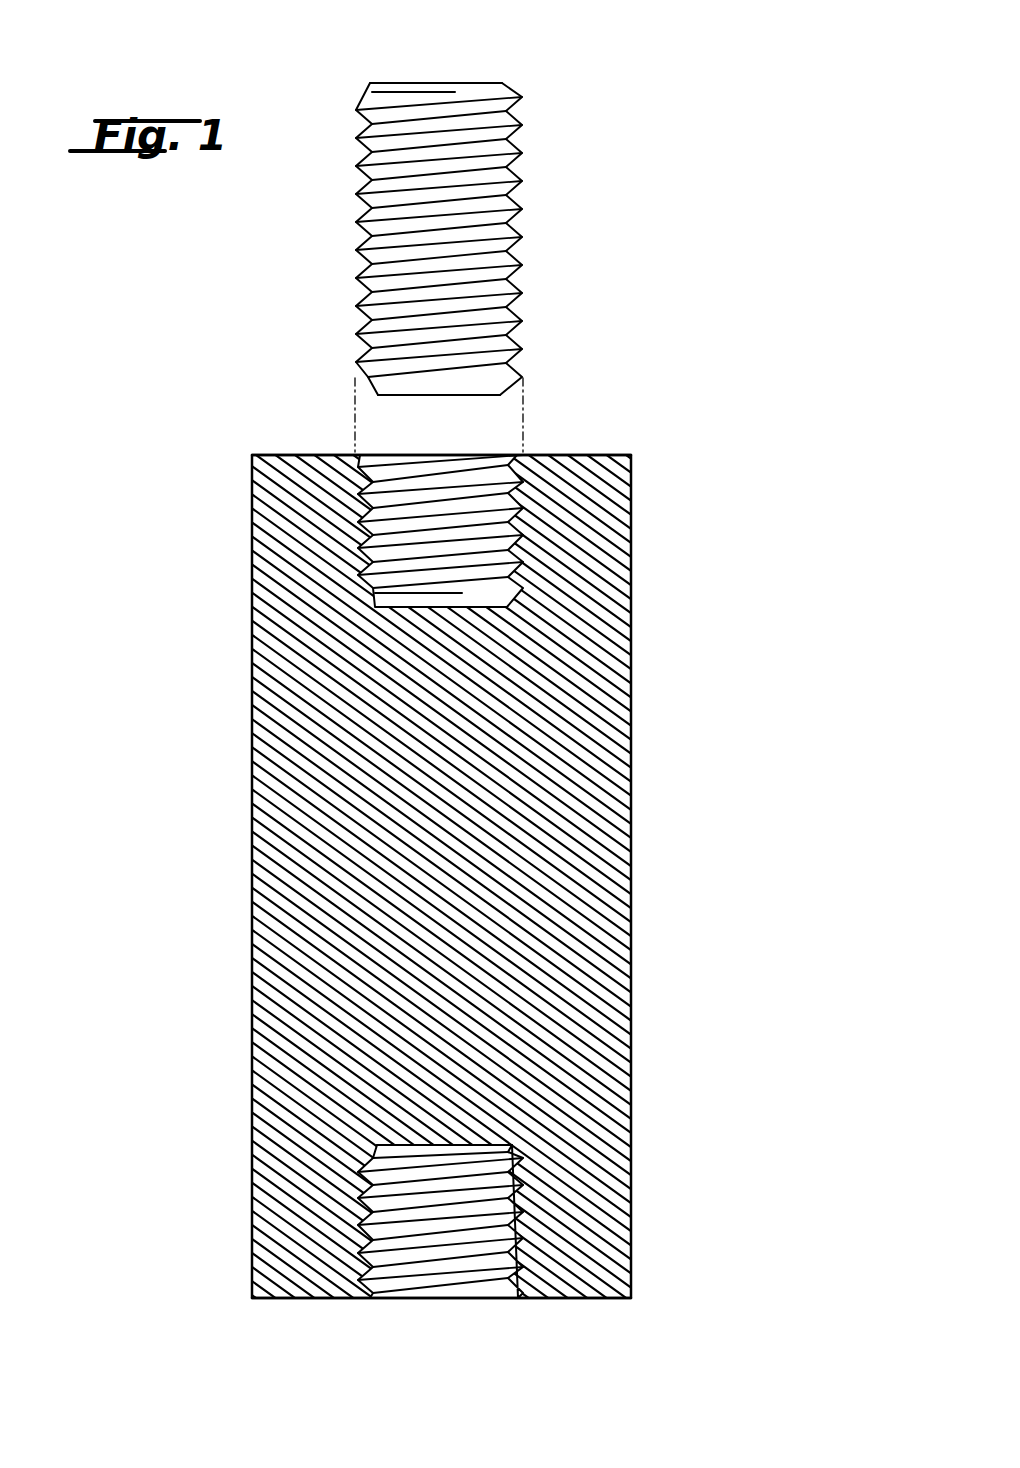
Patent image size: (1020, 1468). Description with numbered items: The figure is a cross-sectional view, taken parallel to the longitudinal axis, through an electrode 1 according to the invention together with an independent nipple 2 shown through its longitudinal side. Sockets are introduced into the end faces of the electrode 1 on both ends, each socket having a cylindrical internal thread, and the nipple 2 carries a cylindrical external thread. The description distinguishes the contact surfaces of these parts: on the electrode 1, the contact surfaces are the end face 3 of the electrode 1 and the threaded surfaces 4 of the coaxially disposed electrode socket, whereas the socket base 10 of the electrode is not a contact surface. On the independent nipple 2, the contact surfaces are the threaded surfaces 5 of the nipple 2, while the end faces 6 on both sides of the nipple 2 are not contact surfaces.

The electrode 1 is at (636, 632).
The independent nipple 2 is at (448, 242).
The end face 3 is at (592, 455).
The threaded surfaces 4 is at (358, 494).
The threaded surfaces 5 is at (356, 293).
The end faces 6 is at (417, 82).
The socket base 10 is at (440, 603).